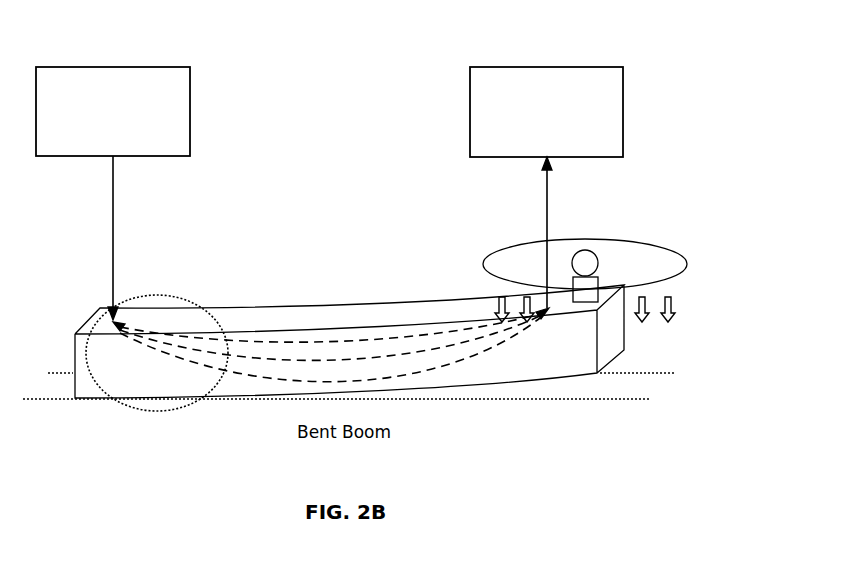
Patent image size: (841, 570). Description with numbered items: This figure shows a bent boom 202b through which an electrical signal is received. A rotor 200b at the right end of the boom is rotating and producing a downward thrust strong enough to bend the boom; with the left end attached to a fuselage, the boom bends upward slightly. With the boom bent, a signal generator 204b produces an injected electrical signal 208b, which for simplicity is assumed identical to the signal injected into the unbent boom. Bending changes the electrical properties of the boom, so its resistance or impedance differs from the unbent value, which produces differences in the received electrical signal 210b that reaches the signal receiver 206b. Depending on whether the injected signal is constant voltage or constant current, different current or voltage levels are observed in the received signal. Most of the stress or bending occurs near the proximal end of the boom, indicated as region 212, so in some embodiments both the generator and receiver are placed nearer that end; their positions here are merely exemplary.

The rotor 200b is at (657, 242).
The bent boom 202b is at (361, 306).
The signal generator 204b is at (125, 54).
The signal receiver 206b is at (548, 67).
The injected electrical signal 208b is at (112, 241).
The received electrical signal 210b is at (549, 203).
The region 212 is at (155, 413).